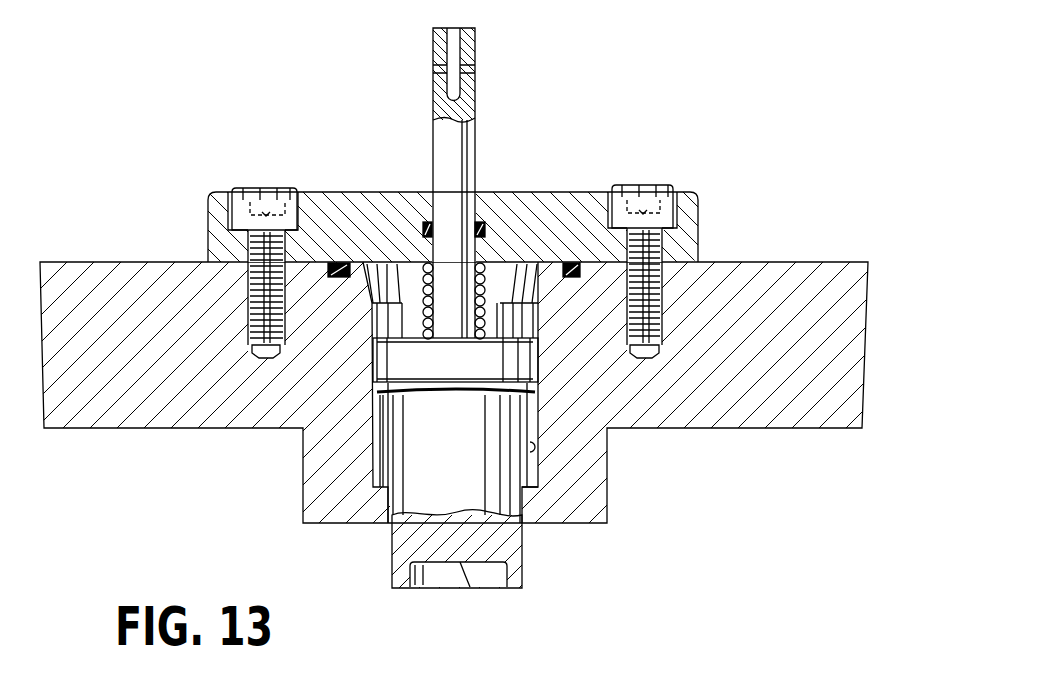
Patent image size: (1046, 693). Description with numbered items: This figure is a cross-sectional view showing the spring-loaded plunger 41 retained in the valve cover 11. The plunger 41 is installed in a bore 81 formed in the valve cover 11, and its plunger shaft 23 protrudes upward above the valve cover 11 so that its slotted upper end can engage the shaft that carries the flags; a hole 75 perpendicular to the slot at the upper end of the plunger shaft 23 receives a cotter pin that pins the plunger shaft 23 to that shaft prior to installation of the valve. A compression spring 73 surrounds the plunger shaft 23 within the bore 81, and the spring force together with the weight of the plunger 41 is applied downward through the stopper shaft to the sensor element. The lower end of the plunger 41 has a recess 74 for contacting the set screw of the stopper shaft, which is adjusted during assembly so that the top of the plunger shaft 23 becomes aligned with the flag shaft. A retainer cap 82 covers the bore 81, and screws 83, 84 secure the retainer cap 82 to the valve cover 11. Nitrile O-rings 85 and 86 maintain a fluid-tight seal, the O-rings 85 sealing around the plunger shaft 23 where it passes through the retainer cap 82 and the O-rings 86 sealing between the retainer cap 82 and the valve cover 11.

The valve cover 11 is at (838, 267).
The plunger shaft 23 is at (475, 108).
The spring-loaded plunger 41 is at (526, 545).
The compression spring 73 is at (513, 262).
The recess 74 is at (457, 563).
The hole 75 is at (472, 68).
The bore 81 is at (532, 447).
The retainer cap 82 is at (695, 228).
The screw 83 is at (653, 183).
The screw 84 is at (250, 190).
The nitrile O-ring 85 is at (425, 225).
The nitrile O-ring 86 is at (340, 262).